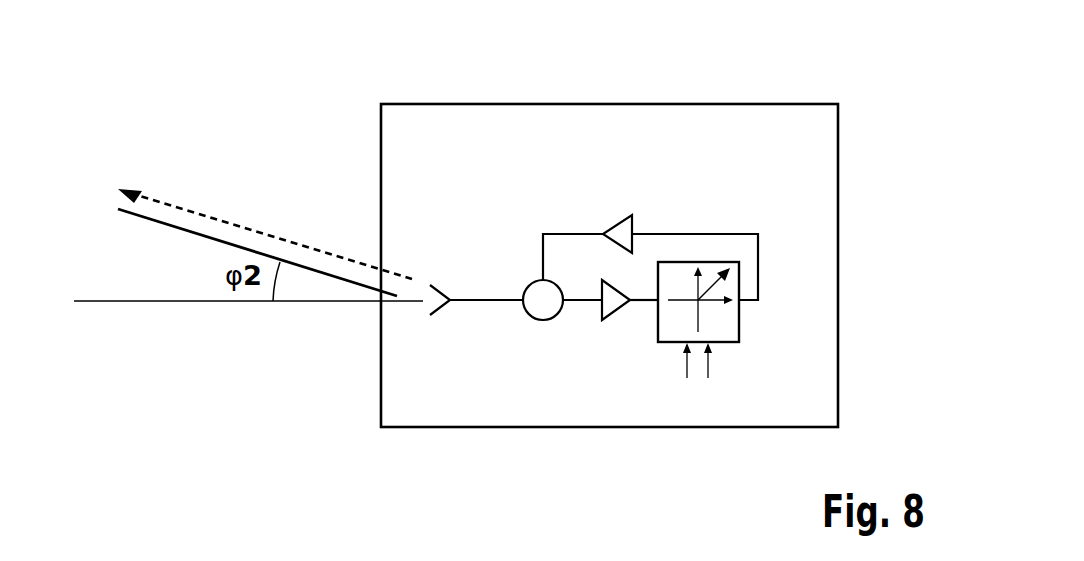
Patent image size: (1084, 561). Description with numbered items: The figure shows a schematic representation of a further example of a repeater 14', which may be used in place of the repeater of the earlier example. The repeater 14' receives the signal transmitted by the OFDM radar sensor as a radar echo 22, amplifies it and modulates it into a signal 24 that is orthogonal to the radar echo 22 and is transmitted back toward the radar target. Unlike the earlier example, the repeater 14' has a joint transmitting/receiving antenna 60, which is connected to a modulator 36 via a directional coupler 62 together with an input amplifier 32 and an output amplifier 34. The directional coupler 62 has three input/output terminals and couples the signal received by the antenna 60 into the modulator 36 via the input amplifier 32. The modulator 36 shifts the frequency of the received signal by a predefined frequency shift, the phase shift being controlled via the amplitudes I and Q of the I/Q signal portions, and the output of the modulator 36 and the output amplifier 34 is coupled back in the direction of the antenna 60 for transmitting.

The repeater 14' is at (609, 231).
The radar echo 22 is at (137, 218).
The signal 24 is at (223, 222).
The input amplifier 32 is at (602, 320).
The output amplifier 34 is at (632, 215).
The modulator 36 is at (739, 330).
The joint transmitting/receiving antenna 60 is at (433, 287).
The directional coupler 62 is at (529, 320).